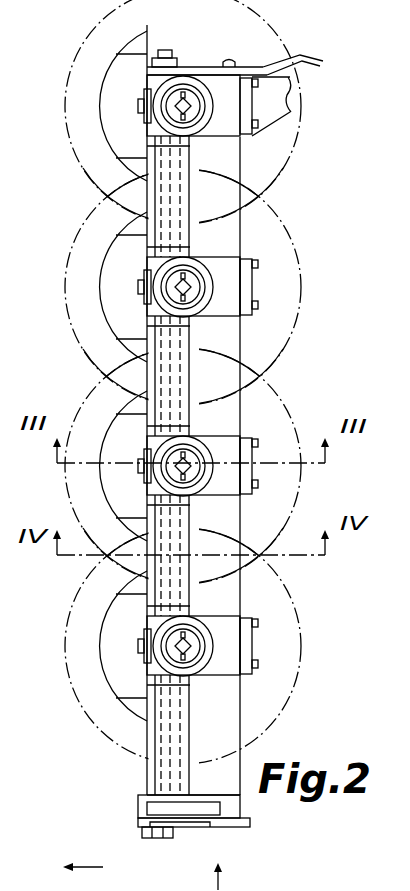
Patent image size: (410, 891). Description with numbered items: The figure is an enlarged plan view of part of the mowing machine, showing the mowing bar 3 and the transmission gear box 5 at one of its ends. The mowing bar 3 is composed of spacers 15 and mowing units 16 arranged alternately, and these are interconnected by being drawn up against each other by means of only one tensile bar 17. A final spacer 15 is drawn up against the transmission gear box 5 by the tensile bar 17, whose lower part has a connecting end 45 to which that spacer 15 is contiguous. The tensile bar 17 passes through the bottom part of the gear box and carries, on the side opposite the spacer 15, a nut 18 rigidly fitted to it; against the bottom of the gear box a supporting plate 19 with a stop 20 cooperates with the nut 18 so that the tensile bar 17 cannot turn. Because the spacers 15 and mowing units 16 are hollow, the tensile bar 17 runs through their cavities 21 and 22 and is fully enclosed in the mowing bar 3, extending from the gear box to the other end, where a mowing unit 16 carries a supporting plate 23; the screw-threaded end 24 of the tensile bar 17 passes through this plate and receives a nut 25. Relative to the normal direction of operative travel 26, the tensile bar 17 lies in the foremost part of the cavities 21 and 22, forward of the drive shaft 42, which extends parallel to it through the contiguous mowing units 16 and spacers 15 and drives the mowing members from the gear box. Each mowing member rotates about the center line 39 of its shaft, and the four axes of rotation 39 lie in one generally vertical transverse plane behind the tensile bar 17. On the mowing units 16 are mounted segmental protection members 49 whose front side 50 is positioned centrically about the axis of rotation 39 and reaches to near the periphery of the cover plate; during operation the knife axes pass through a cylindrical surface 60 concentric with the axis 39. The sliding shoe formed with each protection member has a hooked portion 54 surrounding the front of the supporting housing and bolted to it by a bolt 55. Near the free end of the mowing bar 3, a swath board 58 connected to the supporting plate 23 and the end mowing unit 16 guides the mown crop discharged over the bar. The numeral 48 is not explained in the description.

The mowing bar 3 is at (147, 770).
The transmission gear box 5 is at (138, 800).
The spacer 15 is at (241, 162).
The mowing unit 16 is at (230, 132).
The tensile bar 17 is at (147, 737).
The nut 18 is at (167, 838).
The supporting plate 19 is at (238, 835).
The stop 20 is at (148, 838).
The cavity 21 is at (222, 602).
The cavity 22 is at (257, 476).
The supporting plate 23 is at (217, 72).
The end of the tensile bar 24 is at (168, 50).
The nut 25 is at (173, 62).
The direction of operative travel 26 is at (92, 867).
The center line of the mowing member shaft 39 is at (194, 296).
The drive shaft 42 is at (182, 737).
The connecting end 45 is at (221, 793).
The cutter disc 48 is at (54, 146).
The segmental protection member 49 is at (112, 78).
The front side of the protection member 50 is at (107, 146).
The hooked portion 54 is at (143, 635).
The bolt 55 is at (135, 650).
The swath board 58 is at (317, 62).
The cylindrical surface 60 is at (252, 456).